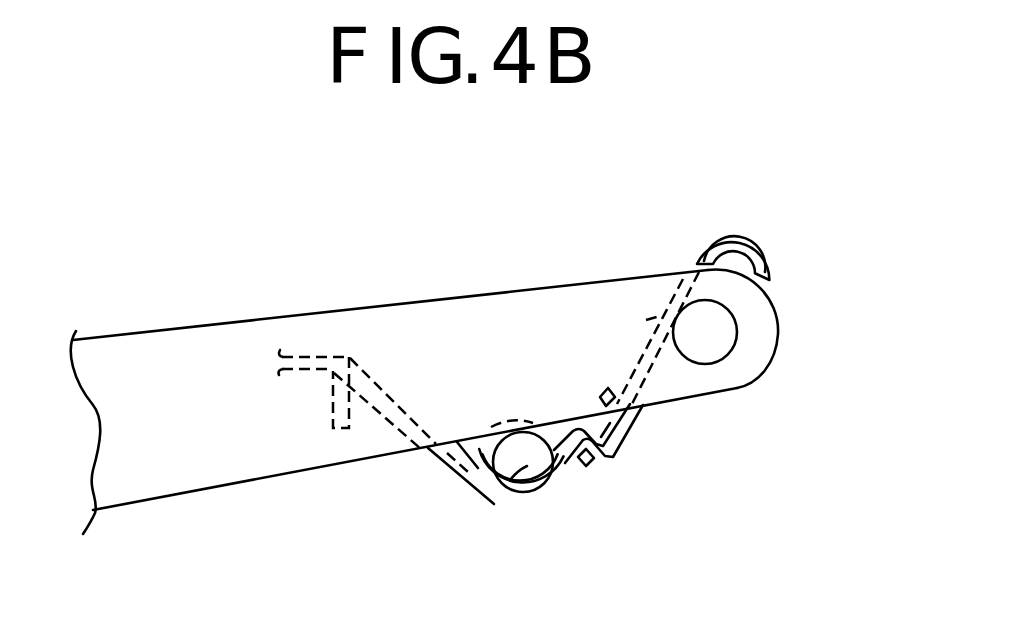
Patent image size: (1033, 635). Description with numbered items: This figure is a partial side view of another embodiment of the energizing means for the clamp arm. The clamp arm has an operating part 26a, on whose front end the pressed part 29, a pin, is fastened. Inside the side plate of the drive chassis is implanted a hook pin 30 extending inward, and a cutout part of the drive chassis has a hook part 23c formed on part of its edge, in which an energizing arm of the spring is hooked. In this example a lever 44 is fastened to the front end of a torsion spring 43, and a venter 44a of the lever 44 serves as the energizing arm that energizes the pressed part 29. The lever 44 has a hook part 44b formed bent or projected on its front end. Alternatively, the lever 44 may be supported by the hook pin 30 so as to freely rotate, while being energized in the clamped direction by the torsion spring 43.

The operating part 26a is at (319, 312).
The hook part 23c is at (332, 395).
The torsion spring 43 is at (537, 510).
The hook pin 30 is at (503, 510).
The pressed part 29 is at (715, 337).
The lever 44 is at (700, 256).
The venter 44a is at (656, 318).
The hook part 44b is at (743, 230).